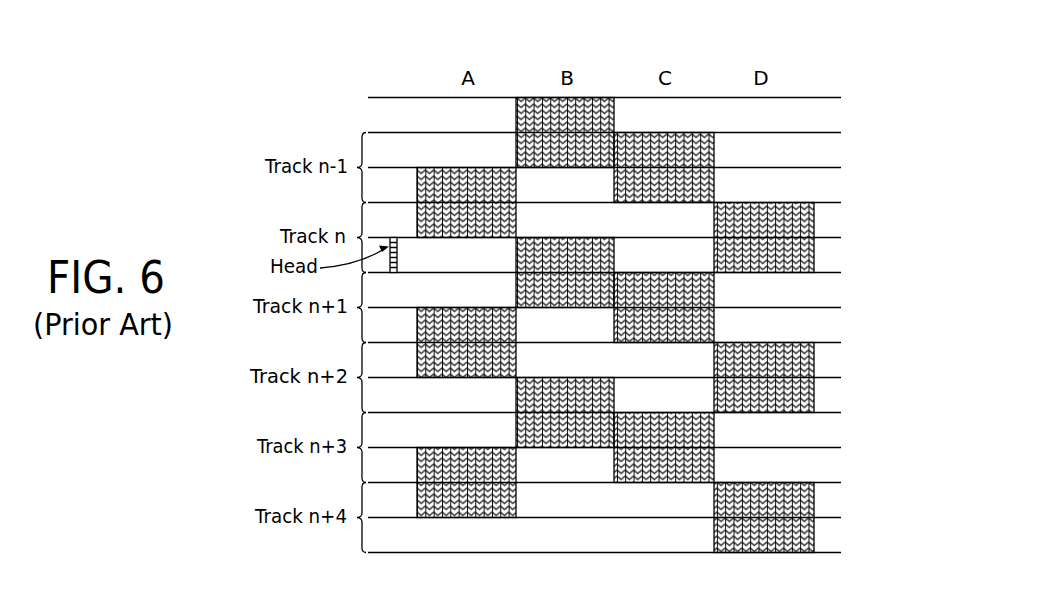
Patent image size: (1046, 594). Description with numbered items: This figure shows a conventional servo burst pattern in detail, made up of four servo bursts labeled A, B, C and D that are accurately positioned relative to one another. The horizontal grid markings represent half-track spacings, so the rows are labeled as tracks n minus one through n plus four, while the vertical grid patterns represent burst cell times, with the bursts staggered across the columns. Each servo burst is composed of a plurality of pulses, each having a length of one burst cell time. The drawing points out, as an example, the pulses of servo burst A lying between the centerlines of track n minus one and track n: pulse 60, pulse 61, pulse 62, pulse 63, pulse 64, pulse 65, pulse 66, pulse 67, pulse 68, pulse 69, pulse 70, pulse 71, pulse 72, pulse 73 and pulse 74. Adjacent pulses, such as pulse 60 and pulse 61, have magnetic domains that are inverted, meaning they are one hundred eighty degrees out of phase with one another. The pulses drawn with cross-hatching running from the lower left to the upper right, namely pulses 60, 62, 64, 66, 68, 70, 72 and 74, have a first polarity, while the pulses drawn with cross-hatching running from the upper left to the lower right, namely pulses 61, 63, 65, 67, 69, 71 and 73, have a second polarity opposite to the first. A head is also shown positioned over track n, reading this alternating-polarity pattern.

The pulse 60 is at (420, 168).
The pulse 61 is at (424, 238).
The pulse 62 is at (433, 168).
The pulse 63 is at (439, 238).
The pulse 64 is at (446, 168).
The pulse 65 is at (452, 238).
The pulse 66 is at (459, 168).
The pulse 67 is at (465, 238).
The pulse 68 is at (472, 168).
The pulse 69 is at (478, 238).
The pulse 70 is at (485, 168).
The pulse 71 is at (491, 238).
The pulse 72 is at (498, 168).
The pulse 73 is at (504, 238).
The pulse 74 is at (510, 168).